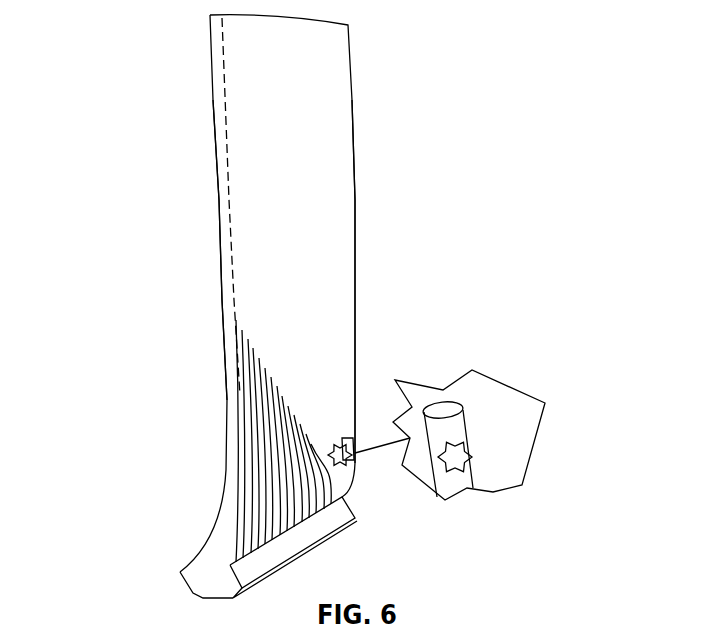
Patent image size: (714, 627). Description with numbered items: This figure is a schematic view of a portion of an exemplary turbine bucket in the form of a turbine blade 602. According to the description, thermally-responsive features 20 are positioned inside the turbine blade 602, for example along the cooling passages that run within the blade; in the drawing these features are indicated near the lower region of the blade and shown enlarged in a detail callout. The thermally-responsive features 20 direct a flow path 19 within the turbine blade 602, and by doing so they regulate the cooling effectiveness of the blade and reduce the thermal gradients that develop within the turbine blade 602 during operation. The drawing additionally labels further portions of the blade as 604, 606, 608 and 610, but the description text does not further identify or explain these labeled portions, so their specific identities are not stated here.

The turbine blade 602 is at (400, 247).
The pressure side surface 604 is at (318, 113).
The trailing edge 606 is at (355, 175).
The leading edge 608 is at (195, 210).
The leading edge seam / dashed line 610 is at (215, 98).
The flow path 19 is at (345, 550).
The thermally-responsive features 20 is at (467, 457).